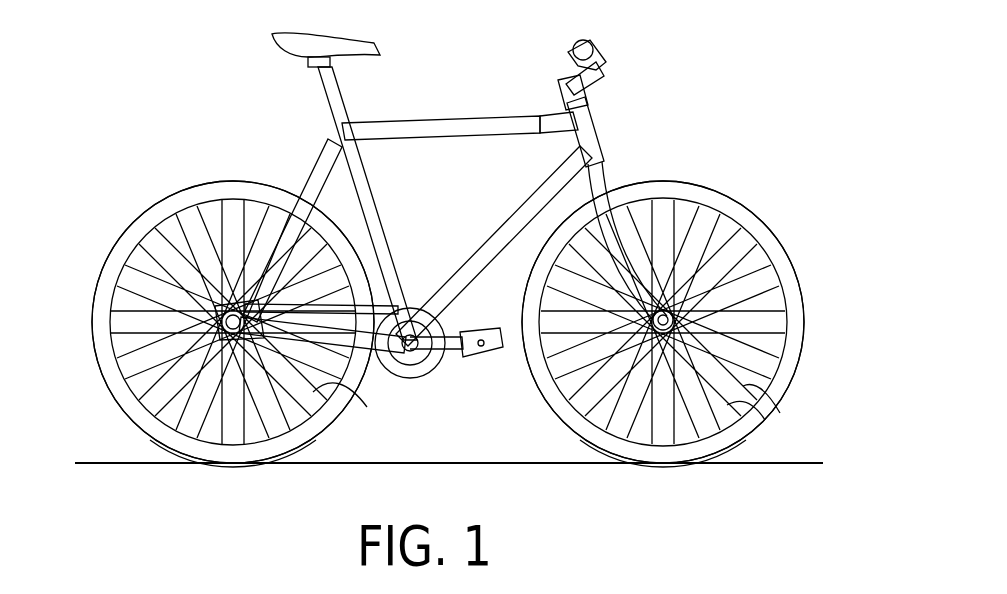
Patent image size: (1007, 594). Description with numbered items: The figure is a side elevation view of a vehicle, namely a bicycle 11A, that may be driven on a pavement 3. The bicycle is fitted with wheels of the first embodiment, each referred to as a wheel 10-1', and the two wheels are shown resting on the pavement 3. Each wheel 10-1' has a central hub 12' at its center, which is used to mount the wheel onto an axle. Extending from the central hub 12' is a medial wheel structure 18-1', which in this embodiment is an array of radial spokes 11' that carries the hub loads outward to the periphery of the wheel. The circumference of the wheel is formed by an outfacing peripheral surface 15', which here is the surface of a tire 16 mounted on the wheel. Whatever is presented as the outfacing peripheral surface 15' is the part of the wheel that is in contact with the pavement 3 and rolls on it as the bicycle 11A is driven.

The pavement 3 is at (455, 461).
The vehicle (bicycle) 11A is at (477, 108).
The outfacing peripheral surface 15' is at (448, 268).
The tire 16 is at (113, 248).
The central hub 12' is at (448, 332).
The medial wheel structure 18-1' is at (447, 322).
The wheel 10-1' is at (440, 488).
The radial spokes 11' is at (579, 409).